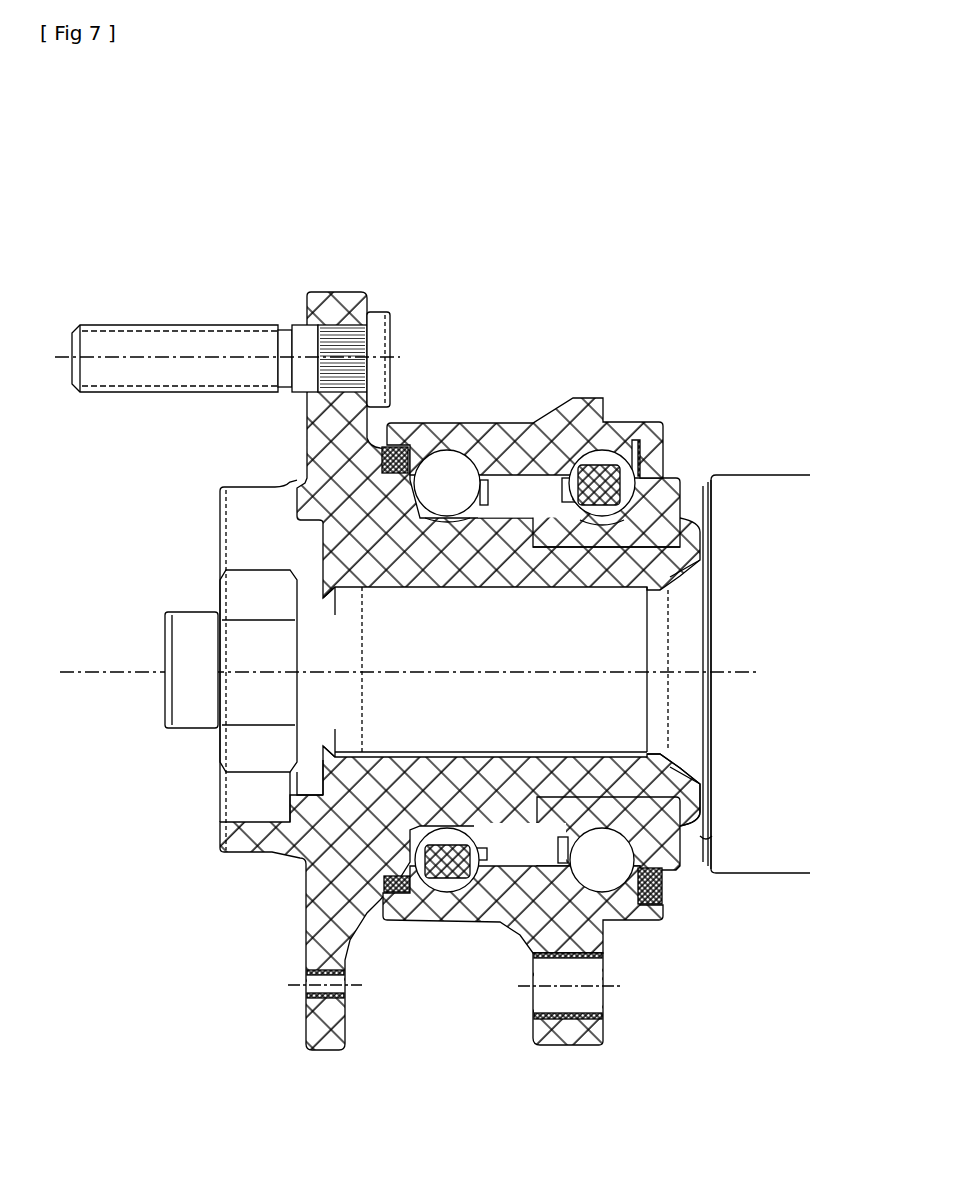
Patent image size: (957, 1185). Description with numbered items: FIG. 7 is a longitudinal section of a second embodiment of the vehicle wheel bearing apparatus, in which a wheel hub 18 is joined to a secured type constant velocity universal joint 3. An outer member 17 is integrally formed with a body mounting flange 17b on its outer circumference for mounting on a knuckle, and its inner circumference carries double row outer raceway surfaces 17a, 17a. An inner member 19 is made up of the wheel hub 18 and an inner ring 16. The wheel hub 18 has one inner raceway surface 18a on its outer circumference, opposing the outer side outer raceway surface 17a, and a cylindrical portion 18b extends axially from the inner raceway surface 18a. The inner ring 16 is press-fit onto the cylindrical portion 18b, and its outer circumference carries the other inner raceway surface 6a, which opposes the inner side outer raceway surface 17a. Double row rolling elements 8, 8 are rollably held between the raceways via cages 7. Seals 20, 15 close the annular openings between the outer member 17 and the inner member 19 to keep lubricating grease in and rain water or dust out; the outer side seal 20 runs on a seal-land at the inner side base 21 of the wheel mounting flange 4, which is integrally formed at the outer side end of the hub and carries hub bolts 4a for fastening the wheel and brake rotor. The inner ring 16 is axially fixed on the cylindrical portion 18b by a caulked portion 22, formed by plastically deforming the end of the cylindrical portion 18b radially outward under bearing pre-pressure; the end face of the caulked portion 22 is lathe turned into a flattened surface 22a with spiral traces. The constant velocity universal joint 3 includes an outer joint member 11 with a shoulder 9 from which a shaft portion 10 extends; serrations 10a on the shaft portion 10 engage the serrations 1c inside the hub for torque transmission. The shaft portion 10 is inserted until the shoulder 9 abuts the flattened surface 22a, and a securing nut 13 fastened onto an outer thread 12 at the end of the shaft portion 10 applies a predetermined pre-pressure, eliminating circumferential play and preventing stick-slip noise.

The constant velocity universal joint 3 is at (788, 443).
The wheel mounting flange 4 is at (332, 295).
The hub bolts 4a is at (166, 342).
The serrations 1c is at (392, 590).
The inner raceway surface 6a is at (603, 512).
The cages 7 is at (560, 832).
The rolling elements 8 is at (590, 876).
The shoulder 9 is at (710, 838).
The shaft portion 10 is at (474, 702).
The serrations 10a is at (568, 770).
The outer joint member 11 is at (740, 473).
The outer thread 12 is at (183, 632).
The securing nut 13 is at (232, 592).
The seal 15 is at (665, 890).
The inner ring 16 is at (667, 490).
The outer member 17 is at (520, 425).
The outer raceway surfaces 17a is at (450, 470).
The body mounting flange 17b is at (578, 1042).
The wheel hub 18 is at (340, 543).
The inner raceway surface 18a is at (455, 540).
The cylindrical portion 18b is at (613, 548).
The inner member 19 is at (318, 597).
The seal 20 is at (383, 893).
The inner side base 21 is at (380, 440).
The caulked portion 22 is at (700, 803).
The flattened surface 22a is at (718, 515).